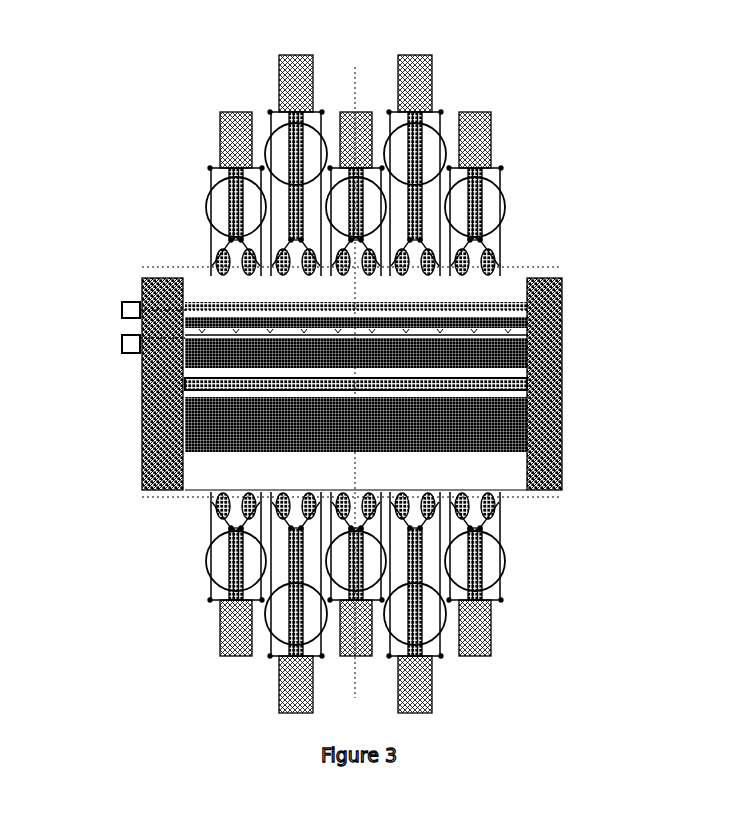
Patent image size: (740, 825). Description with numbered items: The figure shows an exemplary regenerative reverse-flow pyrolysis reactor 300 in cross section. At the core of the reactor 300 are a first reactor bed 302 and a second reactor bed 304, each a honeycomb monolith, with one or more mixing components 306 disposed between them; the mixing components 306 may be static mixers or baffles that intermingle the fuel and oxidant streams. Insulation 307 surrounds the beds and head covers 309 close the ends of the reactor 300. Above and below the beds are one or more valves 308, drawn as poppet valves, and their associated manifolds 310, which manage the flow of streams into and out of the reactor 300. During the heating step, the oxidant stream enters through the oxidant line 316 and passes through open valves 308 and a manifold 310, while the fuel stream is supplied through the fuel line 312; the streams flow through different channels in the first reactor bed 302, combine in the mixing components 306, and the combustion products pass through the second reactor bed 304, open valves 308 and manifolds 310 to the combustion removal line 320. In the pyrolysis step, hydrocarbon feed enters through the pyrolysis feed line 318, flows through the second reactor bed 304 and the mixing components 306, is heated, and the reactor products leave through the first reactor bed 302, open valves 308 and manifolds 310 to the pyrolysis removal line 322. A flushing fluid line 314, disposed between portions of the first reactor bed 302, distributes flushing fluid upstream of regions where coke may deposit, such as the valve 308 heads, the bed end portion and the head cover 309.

The pyrolysis reactor 300 is at (597, 307).
The first reactor bed 302 is at (498, 362).
The second reactor bed 304 is at (498, 425).
The mixing components 306 is at (203, 385).
The insulation 307 is at (562, 475).
The valves 308 is at (236, 268).
The head covers 309 is at (202, 490).
The manifolds 310 is at (447, 143).
The fuel line 312 is at (120, 305).
The flushing fluid line 314 is at (120, 347).
The oxidant line 316 is at (403, 82).
The pyrolysis feed line 318 is at (405, 689).
The combustion removal line 320 is at (372, 644).
The pyrolysis removal line 322 is at (368, 138).